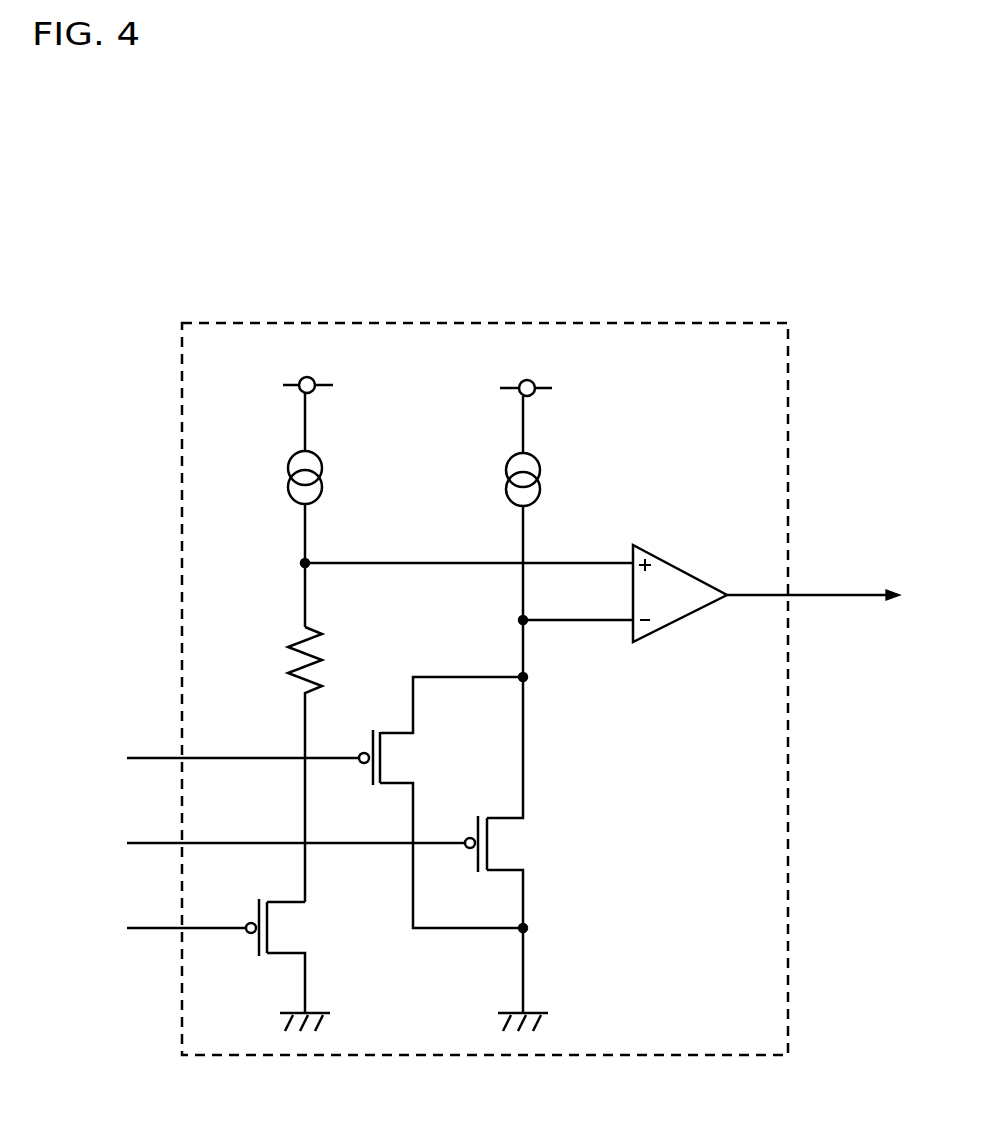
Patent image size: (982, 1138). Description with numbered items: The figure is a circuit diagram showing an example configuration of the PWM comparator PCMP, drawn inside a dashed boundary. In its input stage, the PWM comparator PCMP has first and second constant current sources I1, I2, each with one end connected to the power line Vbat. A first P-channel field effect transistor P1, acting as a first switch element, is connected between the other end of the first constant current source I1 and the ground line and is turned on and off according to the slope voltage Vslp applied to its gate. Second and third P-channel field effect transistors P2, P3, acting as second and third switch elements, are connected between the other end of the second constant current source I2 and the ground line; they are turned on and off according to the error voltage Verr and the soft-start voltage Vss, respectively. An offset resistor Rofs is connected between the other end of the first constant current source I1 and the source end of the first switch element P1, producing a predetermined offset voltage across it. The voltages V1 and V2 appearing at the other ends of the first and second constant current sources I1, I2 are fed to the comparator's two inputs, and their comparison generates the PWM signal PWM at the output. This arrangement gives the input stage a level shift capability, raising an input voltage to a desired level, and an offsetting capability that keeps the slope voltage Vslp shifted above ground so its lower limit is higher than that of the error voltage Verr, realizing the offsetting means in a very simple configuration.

The PWM comparator PCMP is at (491, 324).
The power line Vbat is at (420, 398).
The first constant current source I1 is at (323, 481).
The second constant current source I2 is at (541, 483).
The voltage V1 is at (300, 562).
The voltage V2 is at (519, 620).
The offset resistor Rofs is at (330, 643).
The third P-channel field effect transistor P3 is at (373, 734).
The second P-channel field effect transistor P2 is at (479, 818).
The first P-channel field effect transistor P1 is at (260, 901).
The soft-start voltage Vss is at (213, 758).
The error voltage Verr is at (261, 843).
The slope voltage Vslp is at (152, 926).
The PWM signal PWM is at (813, 582).